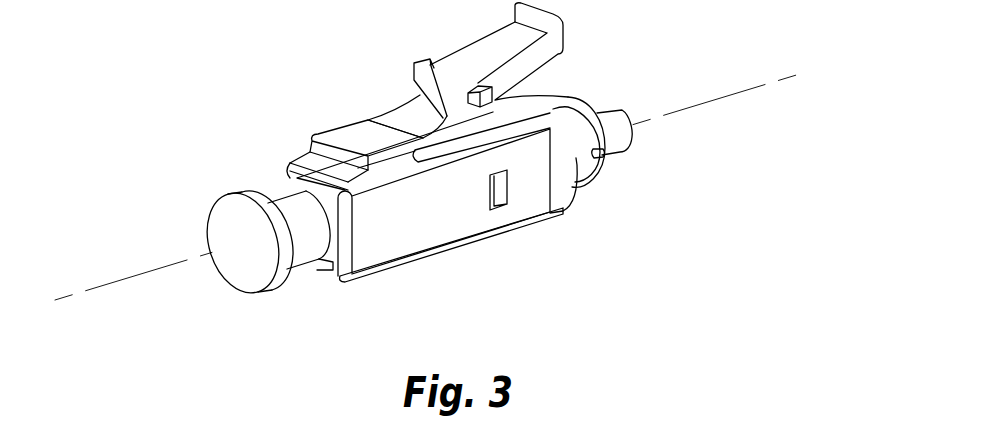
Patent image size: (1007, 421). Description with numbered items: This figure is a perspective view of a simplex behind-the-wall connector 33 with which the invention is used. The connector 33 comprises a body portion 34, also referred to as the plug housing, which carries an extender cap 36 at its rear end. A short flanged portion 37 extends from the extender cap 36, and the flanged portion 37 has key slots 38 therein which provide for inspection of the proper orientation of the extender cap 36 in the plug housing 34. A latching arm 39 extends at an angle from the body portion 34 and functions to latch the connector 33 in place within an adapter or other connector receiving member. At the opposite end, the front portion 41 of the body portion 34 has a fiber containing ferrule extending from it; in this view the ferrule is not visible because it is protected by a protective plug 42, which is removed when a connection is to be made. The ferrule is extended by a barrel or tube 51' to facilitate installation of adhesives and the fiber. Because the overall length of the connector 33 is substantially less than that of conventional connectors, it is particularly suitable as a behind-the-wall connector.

The connector 33 is at (374, 288).
The body portion 34 is at (405, 237).
The extender cap 36 is at (560, 187).
The flanged portion 37 is at (602, 167).
The key slots 38 is at (604, 153).
The latching arm 39 is at (480, 56).
The front portion 41 is at (290, 165).
The protective plug 42 is at (248, 268).
The barrel or tube 51' is at (626, 102).